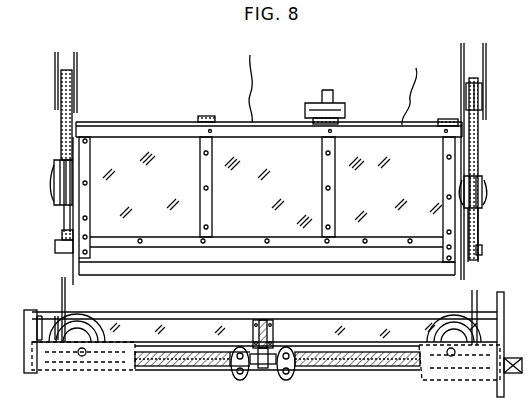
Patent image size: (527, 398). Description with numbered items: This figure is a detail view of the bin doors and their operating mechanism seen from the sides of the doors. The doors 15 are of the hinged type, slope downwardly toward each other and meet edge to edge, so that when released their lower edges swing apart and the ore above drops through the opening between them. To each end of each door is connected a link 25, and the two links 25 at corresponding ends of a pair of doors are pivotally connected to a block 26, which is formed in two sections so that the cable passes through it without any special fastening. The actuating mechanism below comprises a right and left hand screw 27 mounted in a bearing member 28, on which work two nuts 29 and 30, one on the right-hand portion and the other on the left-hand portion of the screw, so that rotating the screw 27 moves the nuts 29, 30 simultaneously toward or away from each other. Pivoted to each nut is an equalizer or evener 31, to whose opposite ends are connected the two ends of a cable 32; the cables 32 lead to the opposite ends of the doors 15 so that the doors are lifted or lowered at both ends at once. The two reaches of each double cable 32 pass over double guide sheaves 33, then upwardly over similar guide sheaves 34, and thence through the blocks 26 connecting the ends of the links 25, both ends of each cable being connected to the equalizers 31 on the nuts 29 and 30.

The door 15 is at (269, 165).
The link 25 is at (477, 227).
The block 26 is at (483, 191).
The right and left hand screw 27 is at (337, 371).
The bearing member 28 is at (273, 344).
The nut 29 is at (268, 370).
The nut 30 is at (243, 376).
The equalizer 31 is at (238, 349).
The cable 32 is at (478, 143).
The double guide sheave 33 is at (83, 322).
The guide sheave 34 is at (469, 92).